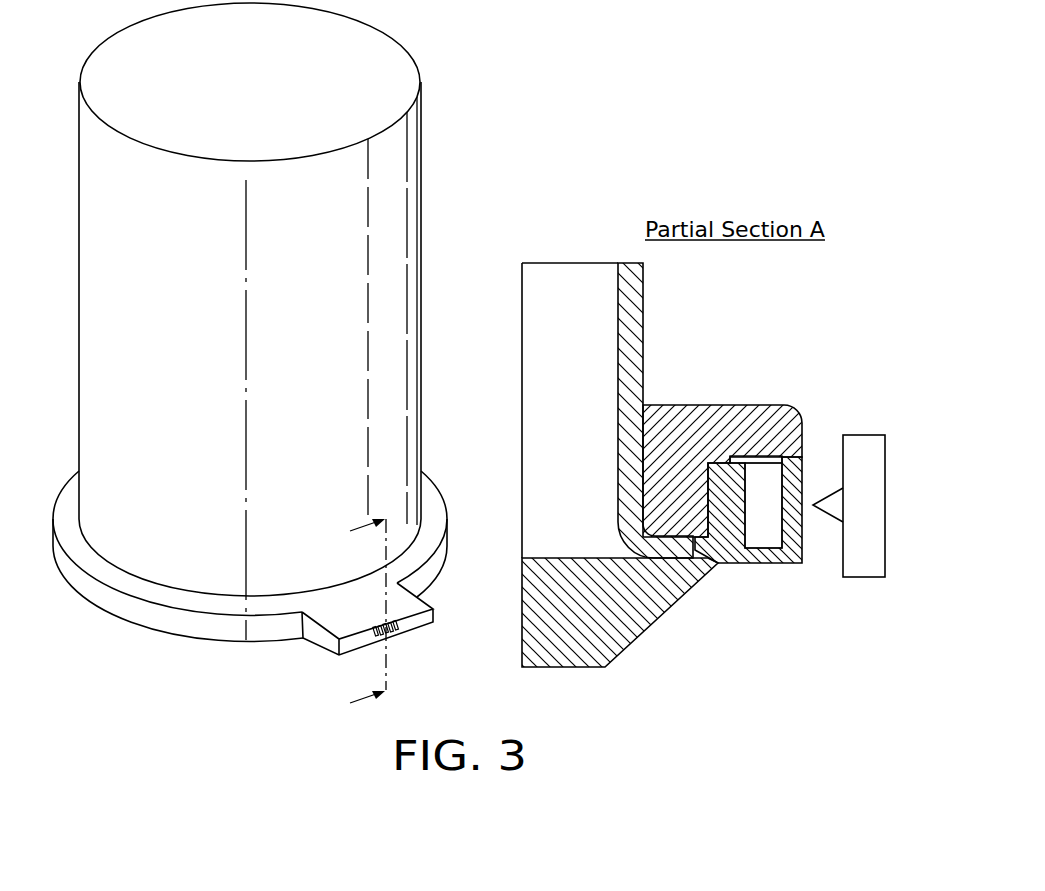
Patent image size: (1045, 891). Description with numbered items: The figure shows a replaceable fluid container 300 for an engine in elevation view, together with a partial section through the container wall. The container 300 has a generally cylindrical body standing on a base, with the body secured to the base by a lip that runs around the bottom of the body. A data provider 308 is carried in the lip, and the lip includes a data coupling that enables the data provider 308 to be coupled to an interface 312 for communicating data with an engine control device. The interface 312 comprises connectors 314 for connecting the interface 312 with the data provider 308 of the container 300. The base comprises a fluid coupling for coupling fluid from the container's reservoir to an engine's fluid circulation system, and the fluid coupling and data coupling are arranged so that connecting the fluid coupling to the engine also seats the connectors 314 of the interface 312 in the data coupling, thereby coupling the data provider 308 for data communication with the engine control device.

The fluid container 300 is at (278, 361).
The data provider 308 is at (763, 538).
The interface 312 is at (872, 510).
The connectors 314 is at (830, 513).